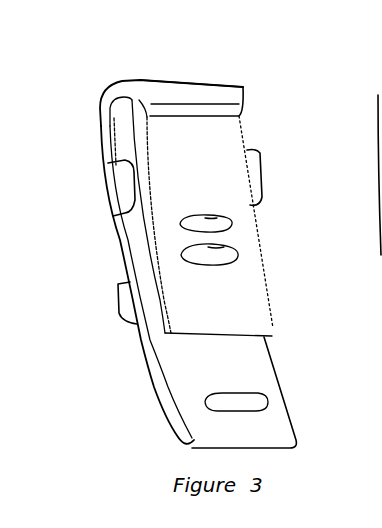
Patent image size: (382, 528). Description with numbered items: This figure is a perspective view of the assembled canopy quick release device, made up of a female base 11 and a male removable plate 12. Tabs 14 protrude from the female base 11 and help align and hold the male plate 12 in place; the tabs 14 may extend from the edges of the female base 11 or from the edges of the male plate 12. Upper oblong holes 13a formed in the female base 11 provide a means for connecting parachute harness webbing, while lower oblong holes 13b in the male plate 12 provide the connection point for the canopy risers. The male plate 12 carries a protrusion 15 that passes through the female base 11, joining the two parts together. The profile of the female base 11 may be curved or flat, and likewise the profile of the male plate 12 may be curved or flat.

The female base 11 is at (245, 365).
The male plate 12 is at (235, 292).
The upper oblong holes 13a is at (223, 223).
The lower oblong holes 13b is at (220, 401).
The tabs 14 is at (123, 182).
The protrusion 15 is at (130, 300).